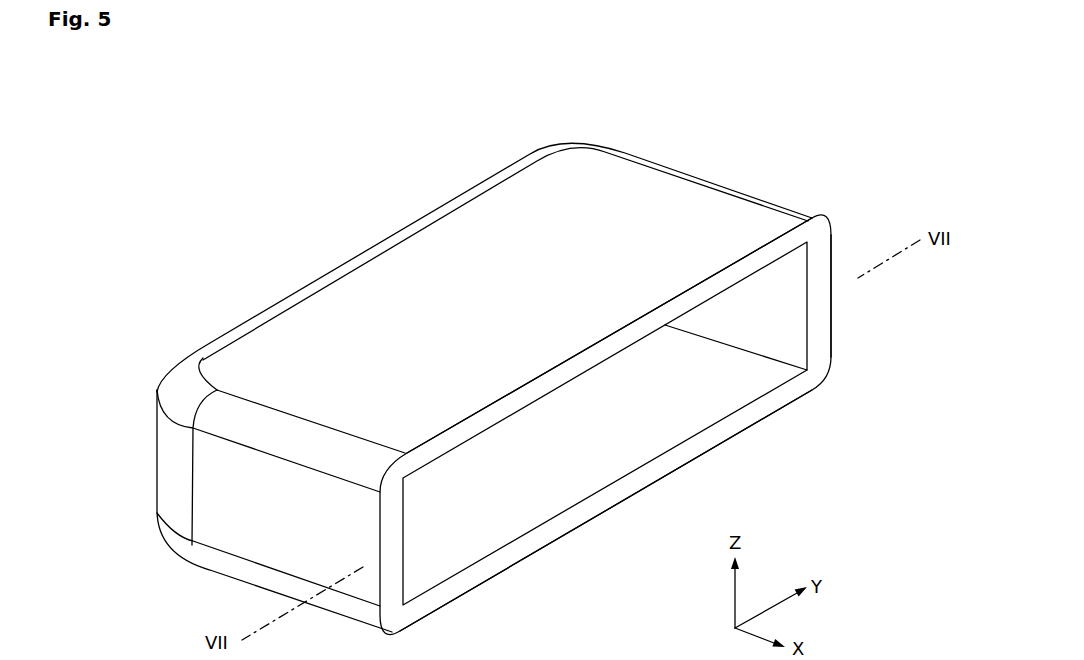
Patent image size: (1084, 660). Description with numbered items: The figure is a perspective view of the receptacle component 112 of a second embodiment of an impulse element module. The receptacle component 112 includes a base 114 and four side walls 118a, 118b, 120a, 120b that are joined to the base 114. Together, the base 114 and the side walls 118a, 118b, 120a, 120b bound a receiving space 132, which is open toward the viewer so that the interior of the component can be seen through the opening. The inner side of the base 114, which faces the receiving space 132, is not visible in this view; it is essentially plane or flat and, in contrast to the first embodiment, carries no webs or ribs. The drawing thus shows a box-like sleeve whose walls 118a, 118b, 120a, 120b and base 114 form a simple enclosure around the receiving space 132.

The receptacle component 112 is at (372, 214).
The base 114 is at (250, 320).
The side wall 118a is at (832, 267).
The side wall 118b is at (263, 523).
The side wall 120a is at (590, 523).
The side wall 120b is at (512, 275).
The receiving space 132 is at (660, 400).